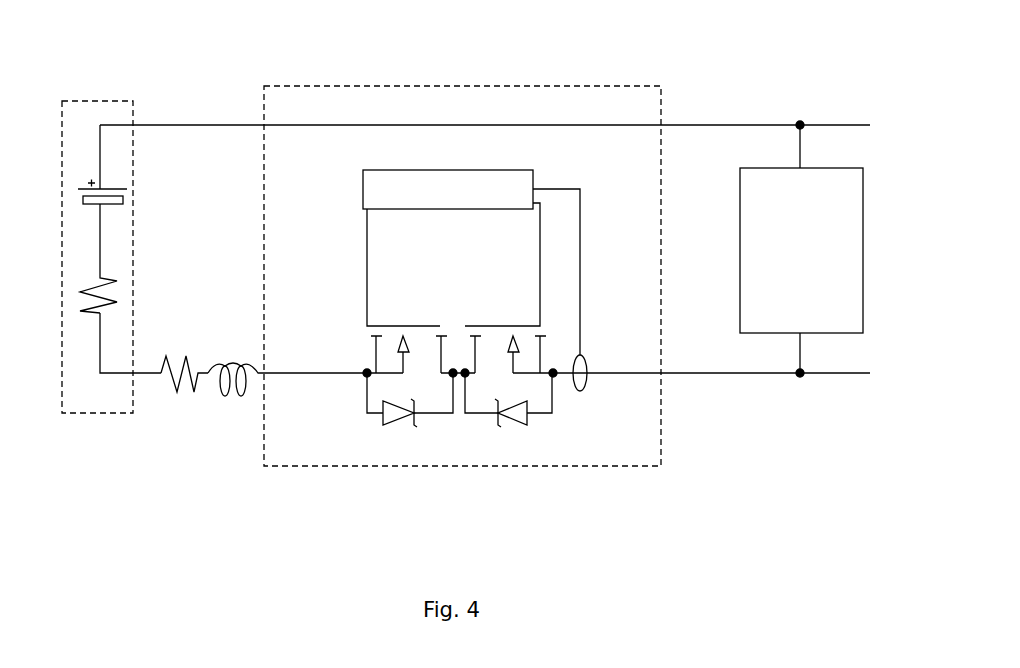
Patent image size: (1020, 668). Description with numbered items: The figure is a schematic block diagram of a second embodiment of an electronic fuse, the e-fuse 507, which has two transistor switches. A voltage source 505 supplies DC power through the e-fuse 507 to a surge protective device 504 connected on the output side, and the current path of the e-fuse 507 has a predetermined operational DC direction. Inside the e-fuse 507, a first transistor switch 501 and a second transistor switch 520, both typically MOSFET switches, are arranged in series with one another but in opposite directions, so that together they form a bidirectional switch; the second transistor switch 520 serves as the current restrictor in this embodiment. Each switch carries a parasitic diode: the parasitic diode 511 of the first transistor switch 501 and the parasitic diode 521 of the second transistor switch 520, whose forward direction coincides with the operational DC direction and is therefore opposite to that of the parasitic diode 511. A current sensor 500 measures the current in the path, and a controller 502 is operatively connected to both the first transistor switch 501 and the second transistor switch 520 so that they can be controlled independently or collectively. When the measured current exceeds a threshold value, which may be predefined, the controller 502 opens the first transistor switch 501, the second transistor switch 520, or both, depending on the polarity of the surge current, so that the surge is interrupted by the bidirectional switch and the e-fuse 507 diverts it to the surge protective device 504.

The current sensor 500 is at (587, 376).
The first transistor switch 501 is at (406, 326).
The controller 502 is at (533, 171).
The surge protective device 504 is at (740, 333).
The voltage source 505 is at (62, 413).
The e-fuse 507 is at (573, 86).
The parasitic diode 511 is at (414, 413).
The second transistor switch 520 is at (508, 326).
The parasitic diode 521 is at (498, 426).